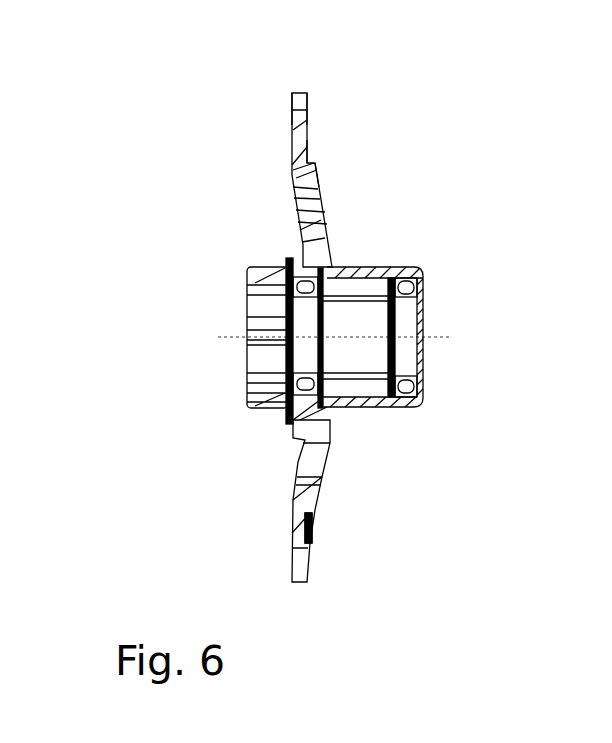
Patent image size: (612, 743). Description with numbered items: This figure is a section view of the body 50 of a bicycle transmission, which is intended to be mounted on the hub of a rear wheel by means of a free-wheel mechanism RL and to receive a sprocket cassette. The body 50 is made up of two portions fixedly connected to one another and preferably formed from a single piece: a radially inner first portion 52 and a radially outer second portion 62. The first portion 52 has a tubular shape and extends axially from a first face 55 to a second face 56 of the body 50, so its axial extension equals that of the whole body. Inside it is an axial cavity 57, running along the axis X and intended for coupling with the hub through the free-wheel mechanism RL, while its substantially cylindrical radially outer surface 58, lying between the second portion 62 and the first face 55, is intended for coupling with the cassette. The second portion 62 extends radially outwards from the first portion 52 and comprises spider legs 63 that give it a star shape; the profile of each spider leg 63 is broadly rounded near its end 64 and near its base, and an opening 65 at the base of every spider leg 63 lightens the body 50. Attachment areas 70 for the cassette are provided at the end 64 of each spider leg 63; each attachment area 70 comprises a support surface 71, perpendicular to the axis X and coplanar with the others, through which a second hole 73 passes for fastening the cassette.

The body 50 is at (225, 168).
The first portion 52 is at (422, 301).
The first face 55 is at (422, 365).
The second face 56 is at (250, 377).
The axial cavity 57 is at (260, 350).
The radially outer surface 58 is at (358, 266).
The second portion 62 is at (295, 462).
The spider legs 63 is at (325, 177).
The end 64 is at (302, 93).
The opening 65 is at (313, 228).
The attachment areas 70 is at (320, 142).
The support surface 71 is at (320, 142).
The second hole 73 is at (302, 125).
The axis X is at (236, 337).
The free-wheel mechanism RL is at (368, 365).